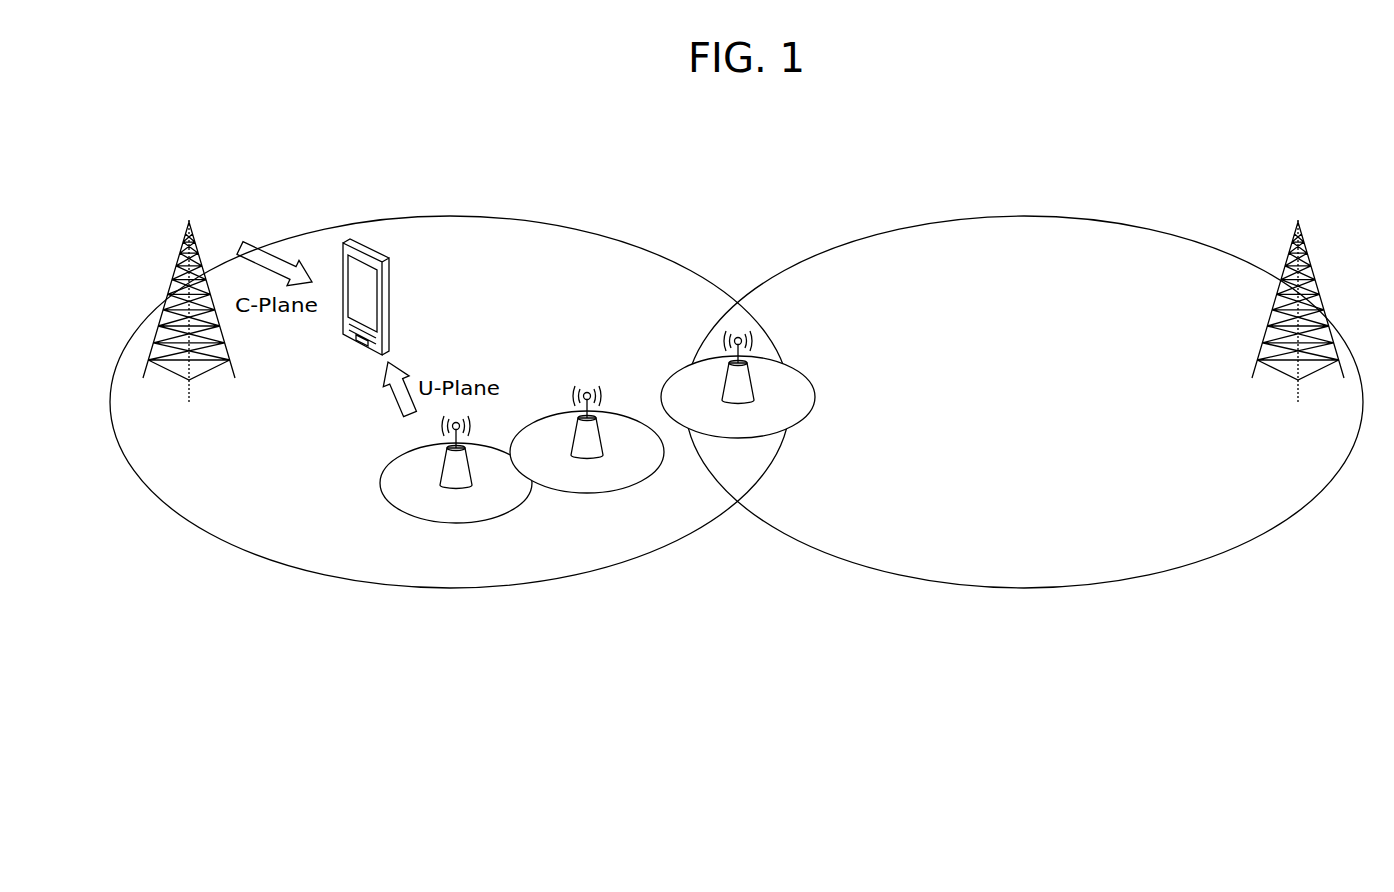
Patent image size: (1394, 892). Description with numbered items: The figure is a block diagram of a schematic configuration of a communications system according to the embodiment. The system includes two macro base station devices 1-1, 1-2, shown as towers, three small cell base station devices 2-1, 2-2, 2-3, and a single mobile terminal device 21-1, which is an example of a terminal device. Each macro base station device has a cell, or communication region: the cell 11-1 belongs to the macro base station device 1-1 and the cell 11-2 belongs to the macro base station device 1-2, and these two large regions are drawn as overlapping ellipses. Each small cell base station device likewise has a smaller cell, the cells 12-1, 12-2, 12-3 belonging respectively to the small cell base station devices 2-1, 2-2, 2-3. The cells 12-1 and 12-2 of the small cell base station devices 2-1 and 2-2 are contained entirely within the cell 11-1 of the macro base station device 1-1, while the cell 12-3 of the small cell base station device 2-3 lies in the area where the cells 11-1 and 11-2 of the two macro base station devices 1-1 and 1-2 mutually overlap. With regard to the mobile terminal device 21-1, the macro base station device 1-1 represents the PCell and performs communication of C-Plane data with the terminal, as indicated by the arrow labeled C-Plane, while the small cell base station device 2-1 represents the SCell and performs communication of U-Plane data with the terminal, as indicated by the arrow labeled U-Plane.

The macro base station device 1-1 is at (174, 272).
The macro base station device 1-2 is at (1316, 288).
The cell 11-1 is at (522, 217).
The cell 11-2 is at (998, 217).
The small cell base station device 2-1 is at (446, 462).
The small cell base station device 2-2 is at (570, 435).
The small cell base station device 2-3 is at (755, 382).
The cell 12-1 is at (455, 523).
The cell 12-2 is at (590, 493).
The cell 12-3 is at (808, 418).
The mobile terminal device 21-1 is at (372, 243).